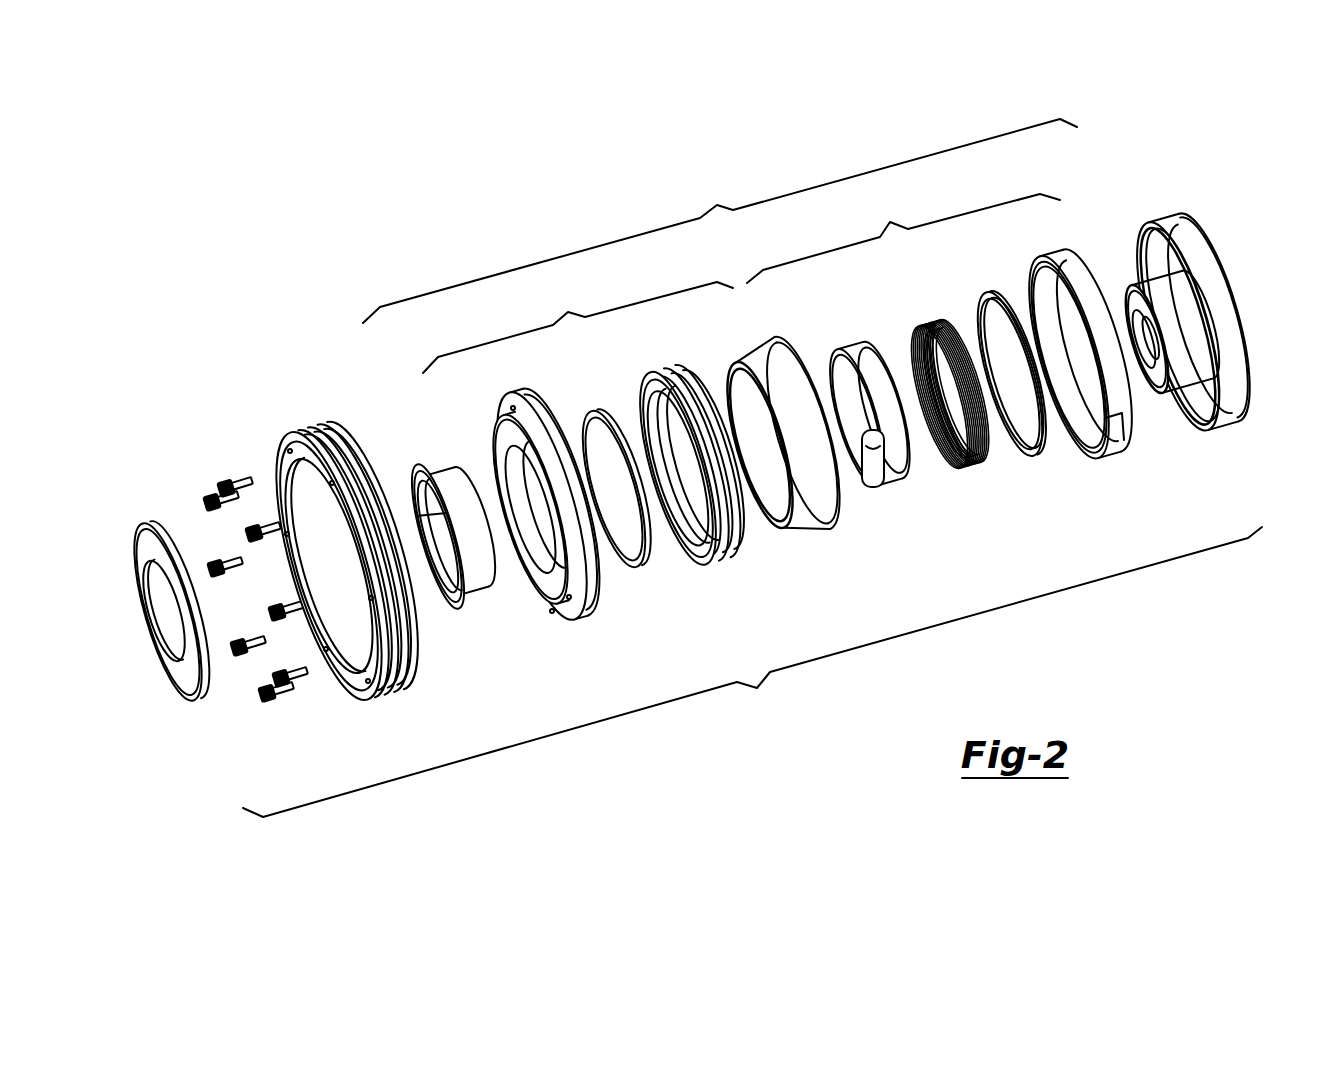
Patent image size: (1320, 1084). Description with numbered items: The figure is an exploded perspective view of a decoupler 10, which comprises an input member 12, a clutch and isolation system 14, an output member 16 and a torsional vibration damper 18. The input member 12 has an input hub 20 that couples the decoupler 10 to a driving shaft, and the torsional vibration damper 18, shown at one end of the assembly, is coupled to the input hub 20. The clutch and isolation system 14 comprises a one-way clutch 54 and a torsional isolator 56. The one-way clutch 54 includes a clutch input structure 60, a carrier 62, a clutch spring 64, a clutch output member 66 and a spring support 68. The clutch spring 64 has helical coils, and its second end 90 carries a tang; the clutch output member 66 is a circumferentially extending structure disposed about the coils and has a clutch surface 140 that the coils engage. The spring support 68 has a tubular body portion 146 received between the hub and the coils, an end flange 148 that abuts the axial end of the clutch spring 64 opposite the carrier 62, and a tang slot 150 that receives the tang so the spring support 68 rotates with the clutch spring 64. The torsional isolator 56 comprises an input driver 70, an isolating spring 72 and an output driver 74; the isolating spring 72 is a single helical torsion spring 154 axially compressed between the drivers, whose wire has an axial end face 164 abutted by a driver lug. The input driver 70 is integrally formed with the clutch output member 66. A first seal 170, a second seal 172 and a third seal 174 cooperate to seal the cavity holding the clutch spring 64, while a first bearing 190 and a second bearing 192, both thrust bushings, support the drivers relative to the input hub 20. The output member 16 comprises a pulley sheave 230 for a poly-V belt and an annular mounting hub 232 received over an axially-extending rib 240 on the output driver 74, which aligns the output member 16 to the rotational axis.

The decoupler 10 is at (752, 672).
The input member 12 is at (1198, 319).
The clutch and isolation system 14 is at (720, 221).
The output member 16 is at (335, 569).
The torsional vibration damper 18 is at (1189, 320).
The input hub 20 is at (1183, 384).
The one-way clutch 54 is at (903, 238).
The torsional isolator 56 is at (578, 327).
The clutch input structure 60 is at (1178, 264).
The carrier 62 is at (950, 394).
The clutch spring 64 is at (970, 462).
The clutch output member 66 is at (798, 507).
The spring support 68 is at (879, 409).
The input driver 70 is at (777, 430).
The isolating spring 72 is at (666, 450).
The output driver 74 is at (525, 482).
The second end 90 is at (913, 398).
The clutch surface 140 is at (774, 520).
The tubular body portion 146 is at (860, 350).
The end flange 148 is at (888, 478).
The tang slot 150 is at (870, 488).
The helical torsion spring 154 is at (693, 553).
The axial end face 164 is at (697, 483).
The first seal 170 is at (1034, 448).
The second seal 172 is at (630, 567).
The third seal 174 is at (153, 523).
The first bearing 190 is at (1057, 257).
The second bearing 192 is at (478, 598).
The pulley sheave 230 is at (328, 432).
The annular mounting hub 232 is at (292, 468).
The rib 240 is at (488, 453).